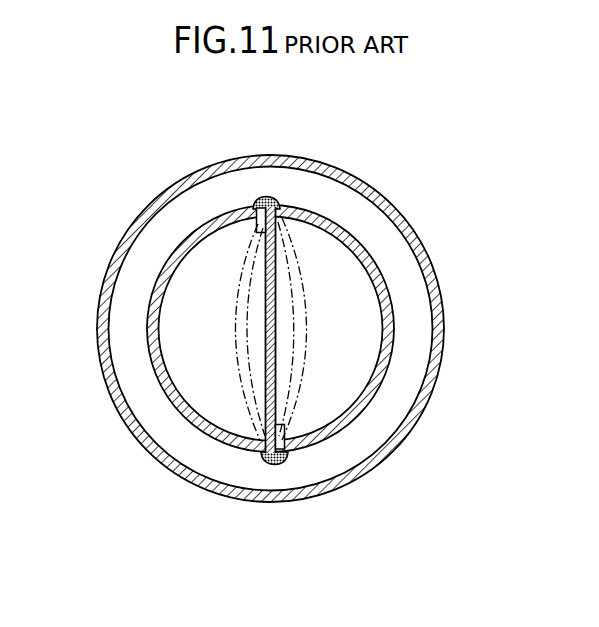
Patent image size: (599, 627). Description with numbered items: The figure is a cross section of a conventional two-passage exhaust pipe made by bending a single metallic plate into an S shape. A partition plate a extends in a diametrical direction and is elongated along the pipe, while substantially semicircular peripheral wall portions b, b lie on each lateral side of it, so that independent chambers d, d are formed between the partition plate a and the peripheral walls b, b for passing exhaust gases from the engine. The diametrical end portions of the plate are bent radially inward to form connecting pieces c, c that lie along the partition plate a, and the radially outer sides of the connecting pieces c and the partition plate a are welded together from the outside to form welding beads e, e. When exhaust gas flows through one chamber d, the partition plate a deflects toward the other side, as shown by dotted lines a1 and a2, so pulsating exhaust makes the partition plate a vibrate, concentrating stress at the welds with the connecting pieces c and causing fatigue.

The partition plate a is at (277, 297).
The dotted lines showing deflection toward the left side a1 is at (245, 356).
The dotted lines showing deflection toward the right side a2 is at (300, 356).
The peripheral wall portion b is at (148, 333).
The connecting piece c is at (255, 229).
The chamber d is at (199, 340).
The welding bead e is at (268, 197).